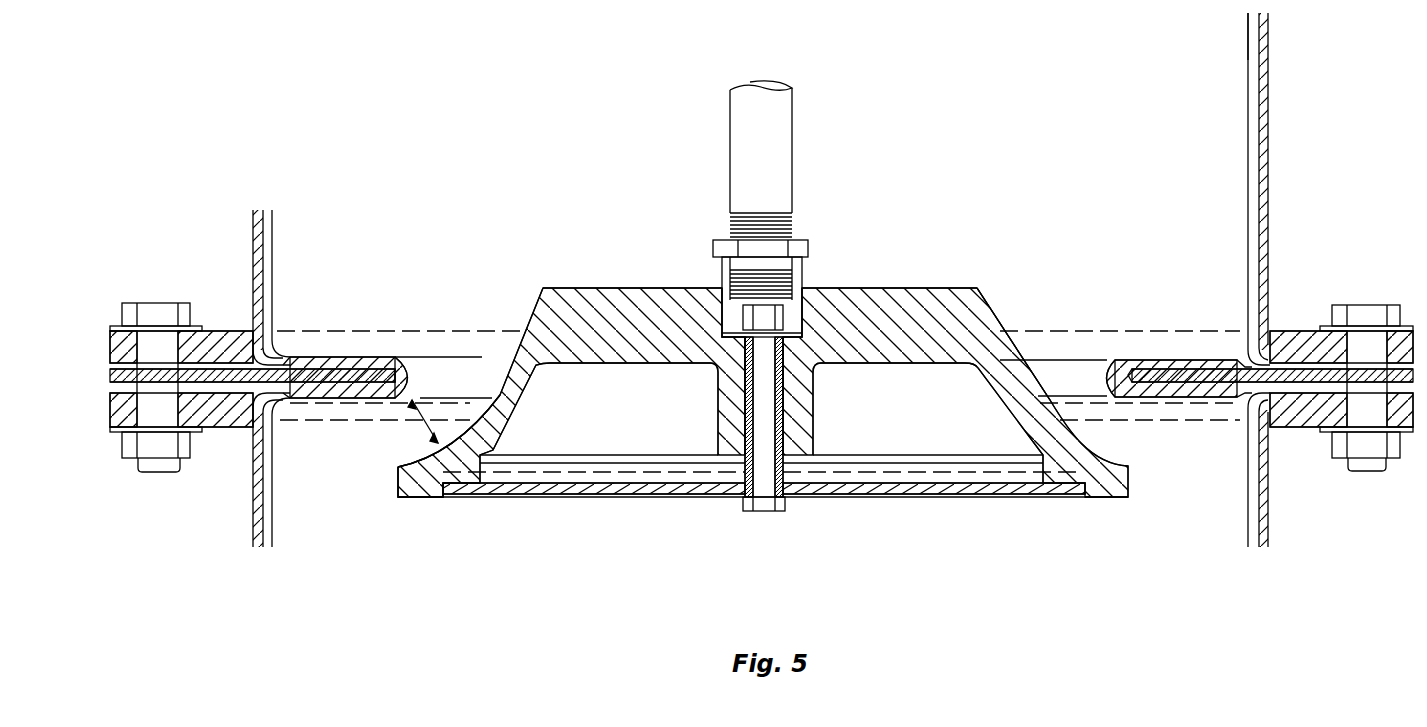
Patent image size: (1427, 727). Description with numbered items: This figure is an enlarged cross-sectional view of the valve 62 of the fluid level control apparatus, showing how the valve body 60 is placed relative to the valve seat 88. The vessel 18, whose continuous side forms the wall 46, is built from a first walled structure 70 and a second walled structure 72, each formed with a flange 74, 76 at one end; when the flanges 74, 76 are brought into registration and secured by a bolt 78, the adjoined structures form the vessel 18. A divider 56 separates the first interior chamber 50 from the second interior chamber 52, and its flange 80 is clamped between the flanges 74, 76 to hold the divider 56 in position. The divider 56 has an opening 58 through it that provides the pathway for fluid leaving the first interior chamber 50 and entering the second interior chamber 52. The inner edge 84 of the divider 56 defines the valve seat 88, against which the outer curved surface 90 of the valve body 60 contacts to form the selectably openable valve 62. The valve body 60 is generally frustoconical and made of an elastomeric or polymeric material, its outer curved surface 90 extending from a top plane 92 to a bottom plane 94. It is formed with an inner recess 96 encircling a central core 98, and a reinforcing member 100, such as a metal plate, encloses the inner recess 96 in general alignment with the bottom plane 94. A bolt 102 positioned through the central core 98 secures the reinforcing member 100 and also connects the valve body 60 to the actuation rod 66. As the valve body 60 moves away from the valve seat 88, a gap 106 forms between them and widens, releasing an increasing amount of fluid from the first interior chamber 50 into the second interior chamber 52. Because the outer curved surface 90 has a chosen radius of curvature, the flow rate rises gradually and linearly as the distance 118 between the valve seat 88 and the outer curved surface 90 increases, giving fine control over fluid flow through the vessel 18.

The vessel 18 is at (1268, 203).
The wall 46 is at (1084, 104).
The first interior chamber 50 is at (1250, 84).
The second interior chamber 52 is at (1265, 510).
The divider 56 is at (1185, 360).
The opening 58 is at (1060, 368).
The valve body 60 is at (890, 288).
The valve 62 is at (468, 271).
The actuation rod 66 is at (792, 168).
The first walled structure 70 is at (252, 228).
The second walled structure 72 is at (255, 505).
The flange 74 is at (228, 331).
The flange 76 is at (237, 415).
The bolt 78 is at (155, 472).
The flange 80 is at (280, 360).
The inner edge 84 is at (1108, 360).
The valve seat 88 is at (1104, 397).
The outer curved surface 90 is at (503, 333).
The top plane 92 is at (630, 288).
The bottom plane 94 is at (407, 497).
The inner recess 96 is at (645, 430).
The central core 98 is at (802, 413).
The reinforcing member 100 is at (690, 490).
The bolt 102 is at (780, 463).
The gap 106 is at (450, 420).
The distance 118 is at (418, 415).